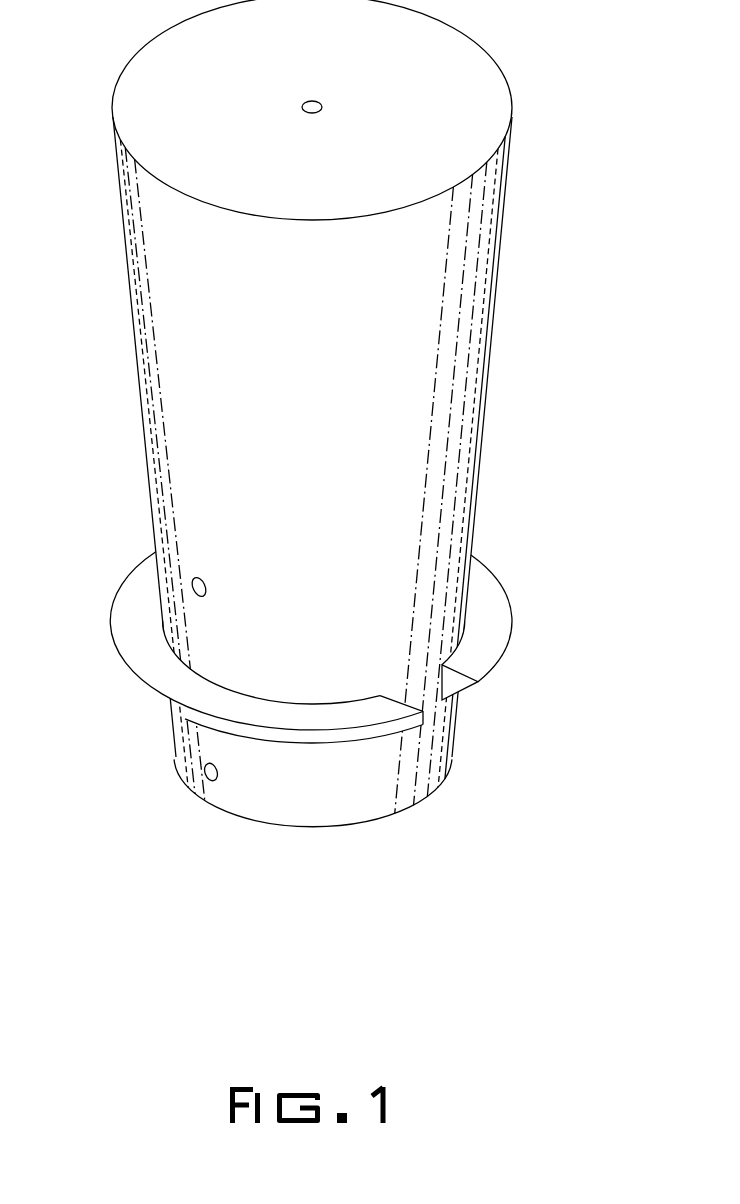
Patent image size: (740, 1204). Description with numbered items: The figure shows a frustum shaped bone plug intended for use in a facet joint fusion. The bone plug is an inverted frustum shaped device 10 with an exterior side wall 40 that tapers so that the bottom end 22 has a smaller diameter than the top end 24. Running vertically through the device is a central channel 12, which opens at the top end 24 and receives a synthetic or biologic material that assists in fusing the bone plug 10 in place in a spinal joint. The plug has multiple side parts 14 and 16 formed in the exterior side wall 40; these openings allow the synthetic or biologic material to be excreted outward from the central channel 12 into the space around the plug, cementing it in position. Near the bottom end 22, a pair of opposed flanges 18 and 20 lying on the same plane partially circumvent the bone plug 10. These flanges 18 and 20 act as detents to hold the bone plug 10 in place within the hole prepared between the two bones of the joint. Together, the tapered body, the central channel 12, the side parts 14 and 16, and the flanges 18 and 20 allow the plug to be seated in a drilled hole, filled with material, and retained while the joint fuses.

The bone plug 10 is at (377, 407).
The vertical central channel 12 is at (318, 101).
The side part 14 is at (203, 577).
The side part 16 is at (217, 779).
The flange 18 is at (152, 653).
The flange 20 is at (495, 623).
The bottom end 22 is at (463, 757).
The top end 24 is at (498, 260).
The exterior side wall 40 is at (482, 430).